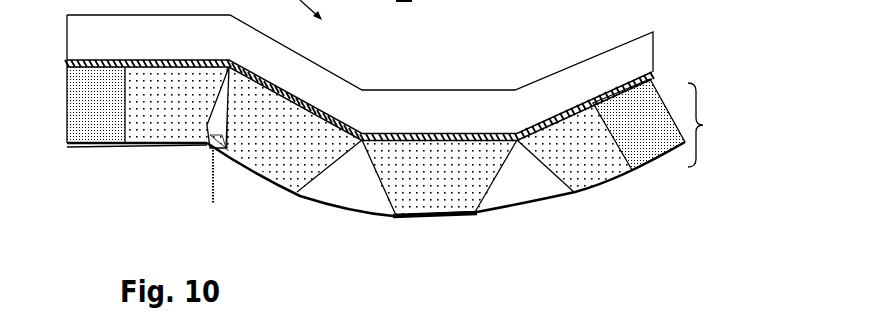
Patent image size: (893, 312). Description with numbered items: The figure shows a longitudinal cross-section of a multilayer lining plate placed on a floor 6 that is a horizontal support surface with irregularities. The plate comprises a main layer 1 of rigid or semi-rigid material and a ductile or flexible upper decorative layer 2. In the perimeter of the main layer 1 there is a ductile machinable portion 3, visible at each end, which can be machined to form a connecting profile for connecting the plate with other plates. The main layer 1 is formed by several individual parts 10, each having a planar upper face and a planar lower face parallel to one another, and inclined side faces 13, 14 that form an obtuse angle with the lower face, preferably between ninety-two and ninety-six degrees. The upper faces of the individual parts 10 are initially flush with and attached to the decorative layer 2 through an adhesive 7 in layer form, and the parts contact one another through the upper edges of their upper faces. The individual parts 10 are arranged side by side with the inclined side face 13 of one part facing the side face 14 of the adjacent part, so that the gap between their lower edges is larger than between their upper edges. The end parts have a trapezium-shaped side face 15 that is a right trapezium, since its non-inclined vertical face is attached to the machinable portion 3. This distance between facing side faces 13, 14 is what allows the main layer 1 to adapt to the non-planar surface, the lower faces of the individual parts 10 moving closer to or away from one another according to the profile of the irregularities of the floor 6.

The main layer 1 is at (482, 141).
The upper decorative layer 2 is at (635, 53).
The machinable portion 3 is at (103, 120).
The floor 6 is at (338, 205).
The adhesive 7 is at (655, 77).
The individual part 10 is at (257, 185).
The inclined side face 13 is at (560, 224).
The inclined side face 14 is at (207, 147).
The trapezium-shaped side face 15 is at (180, 112).